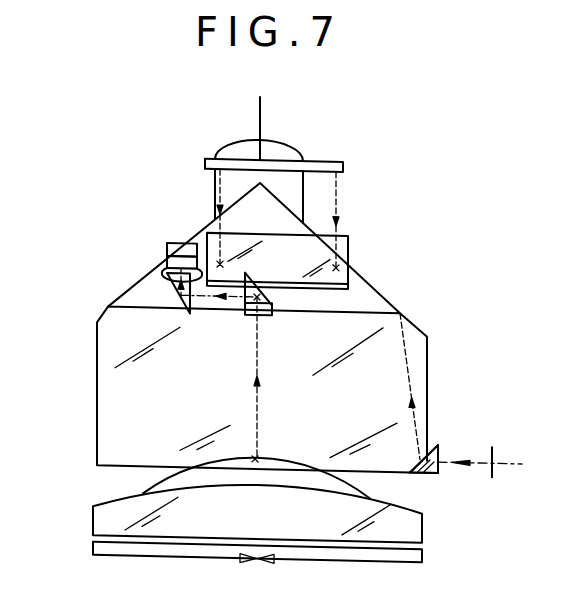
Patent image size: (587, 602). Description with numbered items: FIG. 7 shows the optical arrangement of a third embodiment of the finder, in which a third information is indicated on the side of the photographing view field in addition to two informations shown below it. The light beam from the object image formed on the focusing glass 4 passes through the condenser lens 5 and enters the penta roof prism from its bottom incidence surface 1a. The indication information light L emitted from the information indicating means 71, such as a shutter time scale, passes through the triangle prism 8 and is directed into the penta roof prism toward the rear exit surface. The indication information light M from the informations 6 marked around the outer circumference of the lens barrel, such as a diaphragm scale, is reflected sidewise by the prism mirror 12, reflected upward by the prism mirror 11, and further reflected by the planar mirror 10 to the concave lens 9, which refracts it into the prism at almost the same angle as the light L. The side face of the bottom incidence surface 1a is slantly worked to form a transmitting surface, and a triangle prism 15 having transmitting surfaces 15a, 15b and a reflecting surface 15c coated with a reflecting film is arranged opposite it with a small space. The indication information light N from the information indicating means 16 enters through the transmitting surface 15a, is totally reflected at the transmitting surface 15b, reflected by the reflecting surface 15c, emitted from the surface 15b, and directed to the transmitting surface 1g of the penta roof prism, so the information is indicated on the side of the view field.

The information indicating means 71 is at (327, 158).
The indication information light L is at (218, 195).
The triangle prism 8 is at (348, 246).
The planar mirror 10 is at (187, 247).
The concave lens 9 is at (166, 270).
The triangle prism mirror 11 is at (186, 315).
The triangle prism mirror 12 is at (265, 313).
The indication information light M is at (258, 404).
The indication information light N is at (409, 370).
The bottom incidence surface 1a is at (99, 471).
The informations indicated on the outer circumference of the lens barrel 6 is at (248, 459).
The condenser lens 5 is at (102, 525).
The focusing glass 4 is at (98, 553).
The triangle prism 15 is at (440, 467).
The transmitting surface 15a is at (439, 450).
The transmitting surface 15b is at (438, 441).
The reflecting surface 15c is at (431, 470).
The transmitting surface 1g is at (414, 464).
The means for indicating informations 16 is at (492, 443).